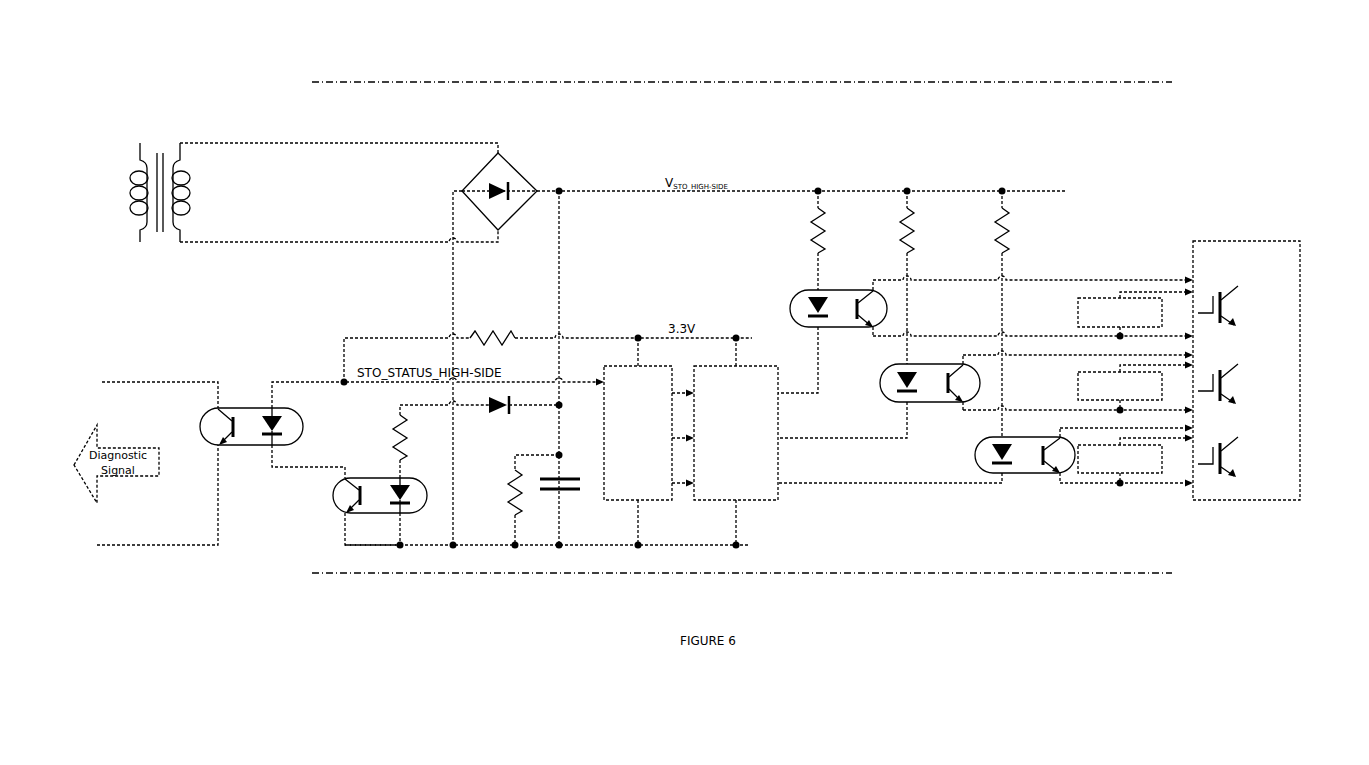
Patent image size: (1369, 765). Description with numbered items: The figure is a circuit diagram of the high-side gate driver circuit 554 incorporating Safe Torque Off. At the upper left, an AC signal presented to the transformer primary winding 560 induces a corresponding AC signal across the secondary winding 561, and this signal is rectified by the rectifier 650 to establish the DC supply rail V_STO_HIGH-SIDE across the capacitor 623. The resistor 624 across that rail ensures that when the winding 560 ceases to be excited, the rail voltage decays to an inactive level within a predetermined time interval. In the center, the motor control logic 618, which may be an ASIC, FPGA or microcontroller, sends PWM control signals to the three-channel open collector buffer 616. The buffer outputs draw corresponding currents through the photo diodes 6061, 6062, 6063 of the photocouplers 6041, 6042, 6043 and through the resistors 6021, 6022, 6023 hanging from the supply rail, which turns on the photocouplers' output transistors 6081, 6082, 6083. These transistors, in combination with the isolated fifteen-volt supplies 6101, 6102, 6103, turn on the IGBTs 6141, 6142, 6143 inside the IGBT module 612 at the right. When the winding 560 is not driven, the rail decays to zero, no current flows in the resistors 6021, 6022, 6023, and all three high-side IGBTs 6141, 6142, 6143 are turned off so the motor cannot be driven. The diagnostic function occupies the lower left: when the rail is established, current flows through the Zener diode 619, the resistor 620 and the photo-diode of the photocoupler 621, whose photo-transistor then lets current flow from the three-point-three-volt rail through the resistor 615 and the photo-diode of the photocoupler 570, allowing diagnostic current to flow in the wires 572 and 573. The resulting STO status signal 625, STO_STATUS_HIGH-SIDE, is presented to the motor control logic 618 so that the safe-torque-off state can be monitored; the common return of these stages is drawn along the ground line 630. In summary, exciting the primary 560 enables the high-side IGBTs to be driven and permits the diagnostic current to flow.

The gate driver circuit 554 is at (742, 327).
The transformer primary winding 560 is at (128, 153).
The secondary winding 561 is at (193, 190).
The rectifier 650 is at (510, 166).
The resistor 6021 is at (812, 232).
The resistor 6022 is at (902, 232).
The resistor 6023 is at (996, 232).
The photocoupler 6041 is at (807, 336).
The photocoupler 6042 is at (879, 396).
The photocoupler 6043 is at (926, 470).
The photo diode 6061 is at (812, 328).
The photo diode 6062 is at (890, 403).
The photo diode 6063 is at (990, 474).
The output transistor 6081 is at (868, 328).
The output transistor 6082 is at (955, 402).
The output transistor 6083 is at (1050, 474).
The isolated 15V supply 6101 is at (1078, 312).
The isolated 15V supply 6102 is at (1078, 385).
The isolated 15V supply 6103 is at (1108, 473).
The IGBT module 612 is at (1266, 337).
The IGBT 6141 is at (1240, 305).
The IGBT 6142 is at (1245, 388).
The IGBT 6143 is at (1245, 456).
The photocoupler 570 is at (250, 408).
The wire 572 is at (115, 382).
The wire 573 is at (115, 545).
The STO status signal 625 is at (360, 338).
The resistor 615 is at (498, 331).
The three-channel open collector buffer 616 is at (736, 433).
The motor control logic 618 is at (638, 433).
The Zener diode 619 is at (504, 414).
The resistor 620 is at (407, 441).
The photocoupler 621 is at (380, 513).
The capacitor 623 is at (567, 495).
The resistor 624 is at (512, 515).
The ground line 630 is at (681, 542).